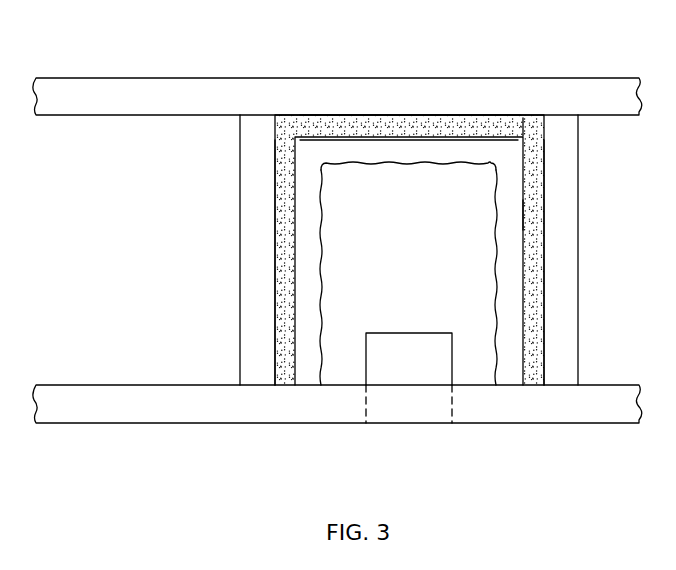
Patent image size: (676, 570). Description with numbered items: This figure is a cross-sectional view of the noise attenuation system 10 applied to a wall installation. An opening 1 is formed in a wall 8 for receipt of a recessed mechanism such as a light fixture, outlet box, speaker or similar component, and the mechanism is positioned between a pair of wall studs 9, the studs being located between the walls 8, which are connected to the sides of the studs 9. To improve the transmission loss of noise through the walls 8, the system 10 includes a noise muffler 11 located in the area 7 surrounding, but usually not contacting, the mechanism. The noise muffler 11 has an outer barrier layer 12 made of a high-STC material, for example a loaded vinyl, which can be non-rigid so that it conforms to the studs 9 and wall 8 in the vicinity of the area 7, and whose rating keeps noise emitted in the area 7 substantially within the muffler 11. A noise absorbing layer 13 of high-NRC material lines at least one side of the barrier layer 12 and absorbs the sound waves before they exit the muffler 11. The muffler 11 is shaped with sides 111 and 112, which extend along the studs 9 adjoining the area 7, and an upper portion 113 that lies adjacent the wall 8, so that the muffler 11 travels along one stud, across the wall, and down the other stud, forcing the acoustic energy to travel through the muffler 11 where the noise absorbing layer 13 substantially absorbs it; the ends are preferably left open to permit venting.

The opening 1 is at (366, 404).
The area 7 is at (487, 342).
The wall 8 is at (451, 78).
The wall stud 9 is at (240, 324).
The system for attenuating noise 10 is at (337, 153).
The noise muffler 11 is at (530, 170).
The side 111 is at (545, 272).
The side 112 is at (275, 226).
The upper portion 113 is at (388, 142).
The outer barrier layer 12 is at (529, 112).
The noise absorbing layer 13 is at (517, 217).